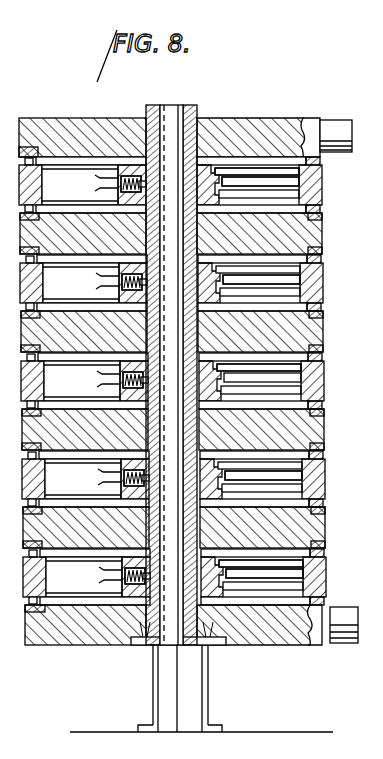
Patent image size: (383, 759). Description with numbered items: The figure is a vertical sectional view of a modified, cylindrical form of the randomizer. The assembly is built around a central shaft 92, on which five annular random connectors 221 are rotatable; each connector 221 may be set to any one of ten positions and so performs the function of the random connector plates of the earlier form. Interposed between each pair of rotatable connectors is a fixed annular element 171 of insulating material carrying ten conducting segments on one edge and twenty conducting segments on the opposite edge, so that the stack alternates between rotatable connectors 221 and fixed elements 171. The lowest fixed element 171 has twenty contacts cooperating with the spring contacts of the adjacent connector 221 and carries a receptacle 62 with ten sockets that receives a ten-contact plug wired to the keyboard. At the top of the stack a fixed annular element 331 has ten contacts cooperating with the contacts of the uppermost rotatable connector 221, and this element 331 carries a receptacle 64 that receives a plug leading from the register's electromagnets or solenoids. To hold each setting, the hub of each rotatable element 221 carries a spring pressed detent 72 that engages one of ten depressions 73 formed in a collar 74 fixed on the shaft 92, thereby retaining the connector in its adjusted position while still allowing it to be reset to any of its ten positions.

The shaft 92 is at (172, 115).
The fixed annular element 331 is at (283, 118).
The receptacle 64 is at (340, 128).
The annular random connector 221 is at (322, 185).
The fixed annular element 171 is at (322, 233).
The spring pressed detent 72 is at (170, 570).
The depressions 73 is at (213, 173).
The collars 74 is at (220, 185).
The receptacle 62 is at (350, 645).